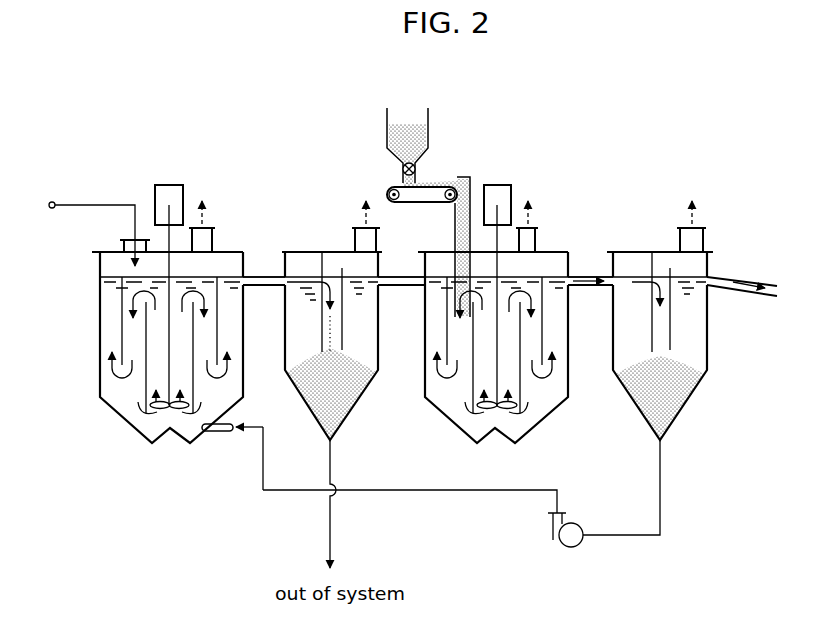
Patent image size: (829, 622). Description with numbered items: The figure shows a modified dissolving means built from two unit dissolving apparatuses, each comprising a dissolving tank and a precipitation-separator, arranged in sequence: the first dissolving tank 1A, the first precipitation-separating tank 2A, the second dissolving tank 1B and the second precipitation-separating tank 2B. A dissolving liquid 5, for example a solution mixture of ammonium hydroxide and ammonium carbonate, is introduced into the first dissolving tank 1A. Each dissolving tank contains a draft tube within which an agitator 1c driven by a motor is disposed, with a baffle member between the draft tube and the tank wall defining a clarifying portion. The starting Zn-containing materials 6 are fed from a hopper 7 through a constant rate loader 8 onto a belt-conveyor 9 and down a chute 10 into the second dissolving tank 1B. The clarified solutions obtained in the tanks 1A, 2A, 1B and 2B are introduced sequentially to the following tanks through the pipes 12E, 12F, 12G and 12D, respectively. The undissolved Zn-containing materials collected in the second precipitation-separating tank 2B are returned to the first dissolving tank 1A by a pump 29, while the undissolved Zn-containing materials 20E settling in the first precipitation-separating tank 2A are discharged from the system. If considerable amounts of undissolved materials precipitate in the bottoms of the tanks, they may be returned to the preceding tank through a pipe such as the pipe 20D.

The dissolving liquid 5 is at (82, 230).
The Zn-containing materials 6 is at (420, 130).
The hopper 7 is at (387, 126).
The constant rate loader 8 is at (416, 167).
The belt-conveyor 9 is at (418, 204).
The chute 10 is at (455, 222).
The first dissolving tank 1A is at (243, 331).
The first precipitation-separating tank 2A is at (380, 307).
The second dissolving tank 1B is at (568, 334).
The second precipitation-separating tank 2B is at (708, 334).
The agitator 1c is at (170, 432).
The pipe 12E is at (260, 274).
The pipe 12F is at (400, 273).
The pipe 12G is at (585, 273).
The pipe 12D is at (744, 276).
The undissolved Zn-containing materials 20E is at (333, 530).
The pipe 20D is at (663, 488).
The pump 29 is at (558, 545).